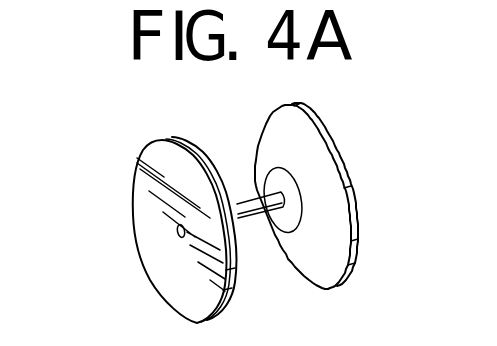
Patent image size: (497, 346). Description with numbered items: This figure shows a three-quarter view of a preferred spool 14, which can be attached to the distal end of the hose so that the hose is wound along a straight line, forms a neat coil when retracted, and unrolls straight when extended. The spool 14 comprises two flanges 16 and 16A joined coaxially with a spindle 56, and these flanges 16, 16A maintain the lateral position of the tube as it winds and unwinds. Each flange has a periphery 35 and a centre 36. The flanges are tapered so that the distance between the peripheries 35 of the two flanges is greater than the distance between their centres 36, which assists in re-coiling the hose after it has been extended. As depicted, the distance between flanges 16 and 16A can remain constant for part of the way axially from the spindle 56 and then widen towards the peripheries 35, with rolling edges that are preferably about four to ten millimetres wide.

The spool 14 is at (124, 239).
The flange 16 is at (170, 280).
The flange 16A is at (330, 178).
The periphery 35 is at (200, 146).
The centre 36 is at (242, 200).
The spindle 56 is at (244, 213).